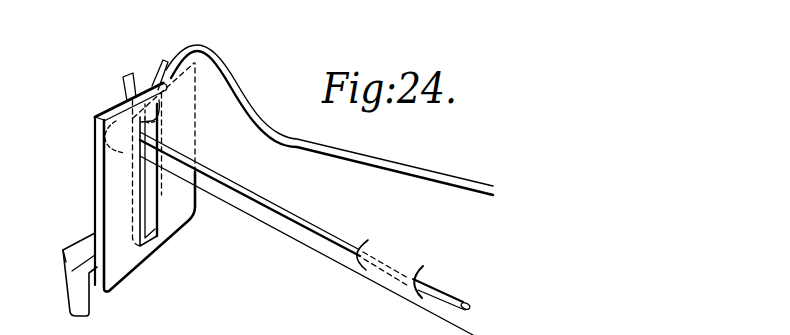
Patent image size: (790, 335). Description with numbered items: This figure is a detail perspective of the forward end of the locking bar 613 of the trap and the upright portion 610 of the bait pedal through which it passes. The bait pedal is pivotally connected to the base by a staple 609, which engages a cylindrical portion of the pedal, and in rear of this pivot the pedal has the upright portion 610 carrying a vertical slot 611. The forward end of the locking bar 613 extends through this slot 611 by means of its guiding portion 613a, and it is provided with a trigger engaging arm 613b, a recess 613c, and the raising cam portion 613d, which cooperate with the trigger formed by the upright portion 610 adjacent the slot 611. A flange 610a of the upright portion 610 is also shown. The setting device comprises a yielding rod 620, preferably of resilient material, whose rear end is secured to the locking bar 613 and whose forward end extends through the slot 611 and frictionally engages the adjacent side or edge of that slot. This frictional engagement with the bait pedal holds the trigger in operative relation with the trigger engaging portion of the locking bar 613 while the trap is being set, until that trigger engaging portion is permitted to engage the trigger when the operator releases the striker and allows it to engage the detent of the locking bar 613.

The staple 609 is at (80, 285).
The upright portion 610 is at (95, 168).
The flange of plate 610a is at (117, 102).
The slot 611 is at (148, 188).
The locking bar 613 is at (410, 185).
The guiding portion 613a is at (124, 94).
The trigger engaging arm 613b is at (161, 72).
The recess 613c is at (147, 118).
The raising cam portion 613d is at (134, 76).
The yielding rod 620 is at (273, 205).